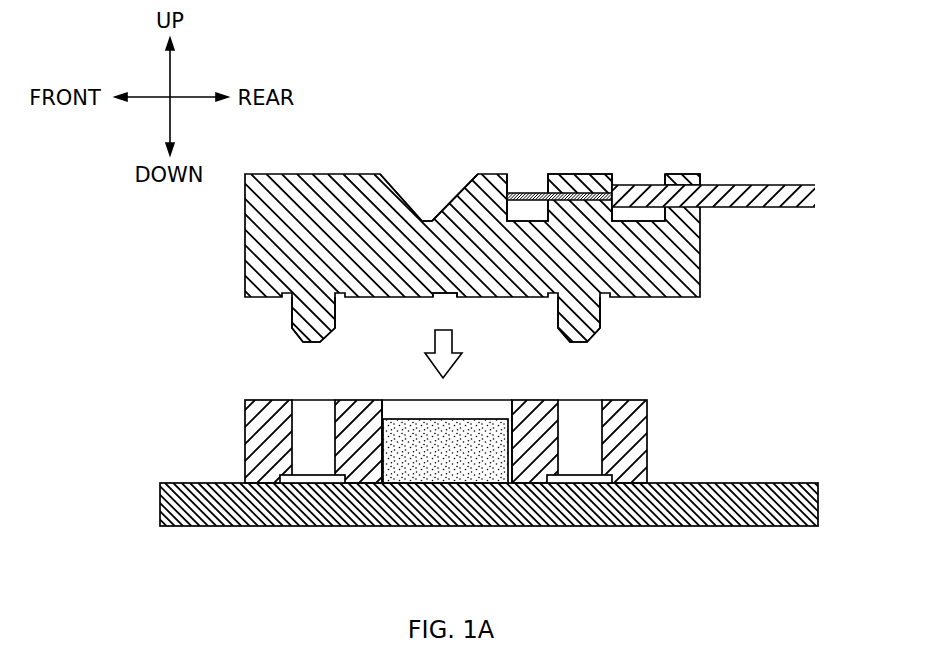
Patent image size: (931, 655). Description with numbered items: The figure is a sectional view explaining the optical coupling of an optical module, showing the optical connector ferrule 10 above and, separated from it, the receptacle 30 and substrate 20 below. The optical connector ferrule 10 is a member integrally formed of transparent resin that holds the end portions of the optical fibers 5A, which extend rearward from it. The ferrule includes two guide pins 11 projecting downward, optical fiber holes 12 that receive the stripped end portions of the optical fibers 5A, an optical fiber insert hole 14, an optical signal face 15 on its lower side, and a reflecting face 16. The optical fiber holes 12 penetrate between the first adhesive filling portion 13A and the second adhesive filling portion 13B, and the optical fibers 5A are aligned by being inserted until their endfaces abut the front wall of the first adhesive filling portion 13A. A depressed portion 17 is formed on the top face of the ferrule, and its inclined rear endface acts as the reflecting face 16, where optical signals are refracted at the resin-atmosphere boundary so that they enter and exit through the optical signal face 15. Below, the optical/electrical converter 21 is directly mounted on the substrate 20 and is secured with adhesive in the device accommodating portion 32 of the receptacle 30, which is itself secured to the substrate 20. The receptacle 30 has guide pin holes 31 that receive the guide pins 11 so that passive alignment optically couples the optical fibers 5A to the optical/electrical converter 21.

The optical fibers 5A is at (763, 200).
The optical connector ferrule 10 is at (283, 212).
The guide pins 11 is at (302, 327).
The optical fiber holes 12 is at (590, 195).
The first adhesive filling portion 13A is at (527, 176).
The second adhesive filling portion 13B is at (647, 172).
The optical fiber insert hole 14 is at (700, 208).
The optical signal face 15 is at (445, 297).
The reflecting face 16 is at (460, 192).
The depressed portion 17 is at (410, 176).
The substrate 20 is at (765, 497).
The optical/electrical converter 21 is at (485, 463).
The receptacle 30 is at (630, 440).
The guide pin holes 31 is at (293, 459).
The device accommodating portion 32 is at (383, 410).